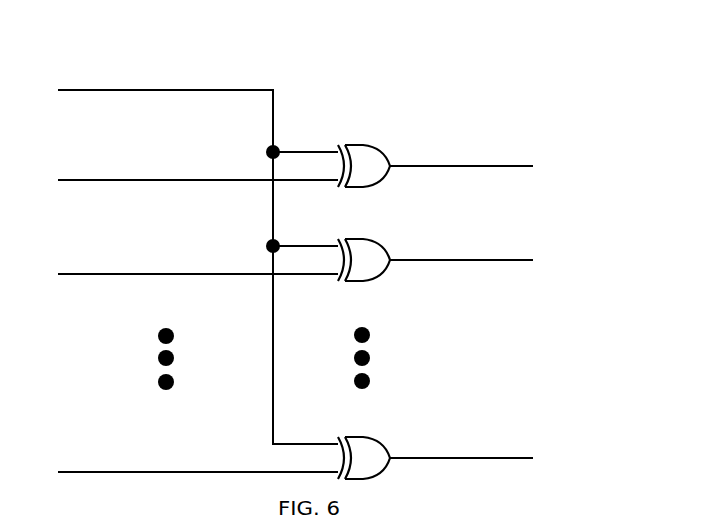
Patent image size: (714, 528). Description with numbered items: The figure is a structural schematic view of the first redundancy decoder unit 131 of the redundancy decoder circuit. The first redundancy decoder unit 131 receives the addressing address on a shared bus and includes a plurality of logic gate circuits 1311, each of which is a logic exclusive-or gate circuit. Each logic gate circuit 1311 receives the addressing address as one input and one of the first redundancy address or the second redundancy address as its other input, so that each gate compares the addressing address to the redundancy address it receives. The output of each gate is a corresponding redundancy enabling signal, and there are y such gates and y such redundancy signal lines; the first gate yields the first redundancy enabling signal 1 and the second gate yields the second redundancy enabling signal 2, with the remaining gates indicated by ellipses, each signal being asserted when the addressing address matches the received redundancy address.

The first redundancy decoder unit 131 is at (360, 40).
The logic gate circuit 1311 is at (365, 144).
The first output signal CRFGB 1 is at (461, 151).
The second output signal CRFGB 2 is at (461, 249).